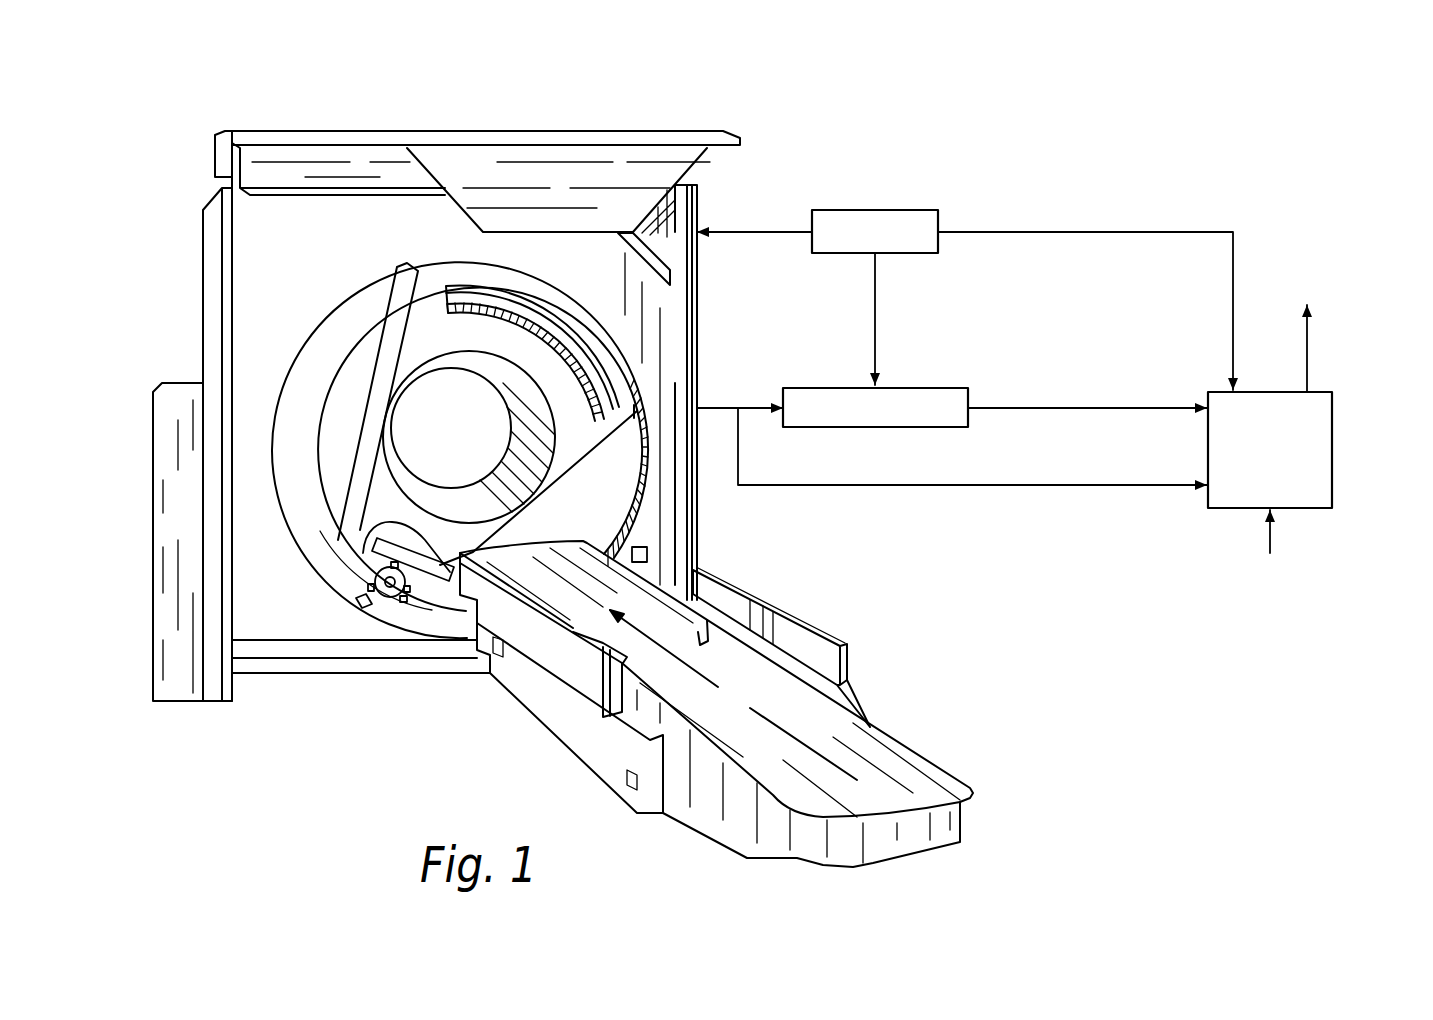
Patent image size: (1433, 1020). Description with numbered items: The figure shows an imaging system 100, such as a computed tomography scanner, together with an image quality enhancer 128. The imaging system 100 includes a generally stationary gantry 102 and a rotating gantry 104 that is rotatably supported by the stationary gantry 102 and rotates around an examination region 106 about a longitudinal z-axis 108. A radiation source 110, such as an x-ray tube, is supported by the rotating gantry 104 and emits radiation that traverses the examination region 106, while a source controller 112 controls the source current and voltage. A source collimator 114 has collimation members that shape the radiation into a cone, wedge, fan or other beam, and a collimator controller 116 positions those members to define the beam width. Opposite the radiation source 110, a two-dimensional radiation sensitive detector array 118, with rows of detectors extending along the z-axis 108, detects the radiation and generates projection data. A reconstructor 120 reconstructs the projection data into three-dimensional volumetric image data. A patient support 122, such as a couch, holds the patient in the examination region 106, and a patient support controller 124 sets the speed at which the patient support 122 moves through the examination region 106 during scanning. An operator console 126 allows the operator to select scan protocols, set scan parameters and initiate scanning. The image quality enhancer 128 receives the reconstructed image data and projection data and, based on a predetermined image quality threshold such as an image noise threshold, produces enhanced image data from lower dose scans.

The imaging system 100 is at (1260, 160).
The stationary gantry 102 is at (203, 282).
The rotating gantry 104 is at (453, 330).
The examination region 106 is at (470, 443).
The z-axis 108 is at (783, 708).
The radiation source 110 is at (387, 597).
The source controller 112 is at (360, 601).
The source collimator 114 is at (372, 524).
The collimator controller 116 is at (370, 588).
The radiation sensitive detector array 118 is at (593, 363).
The reconstructor 120 is at (925, 388).
The patient support 122 is at (697, 658).
The patient support controller 124 is at (647, 557).
The operator console 126 is at (882, 210).
The image quality enhancer 128 is at (1333, 450).